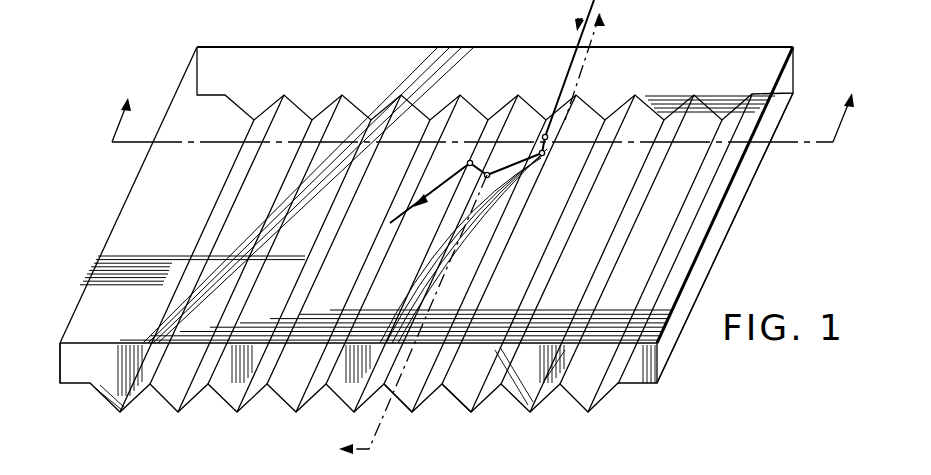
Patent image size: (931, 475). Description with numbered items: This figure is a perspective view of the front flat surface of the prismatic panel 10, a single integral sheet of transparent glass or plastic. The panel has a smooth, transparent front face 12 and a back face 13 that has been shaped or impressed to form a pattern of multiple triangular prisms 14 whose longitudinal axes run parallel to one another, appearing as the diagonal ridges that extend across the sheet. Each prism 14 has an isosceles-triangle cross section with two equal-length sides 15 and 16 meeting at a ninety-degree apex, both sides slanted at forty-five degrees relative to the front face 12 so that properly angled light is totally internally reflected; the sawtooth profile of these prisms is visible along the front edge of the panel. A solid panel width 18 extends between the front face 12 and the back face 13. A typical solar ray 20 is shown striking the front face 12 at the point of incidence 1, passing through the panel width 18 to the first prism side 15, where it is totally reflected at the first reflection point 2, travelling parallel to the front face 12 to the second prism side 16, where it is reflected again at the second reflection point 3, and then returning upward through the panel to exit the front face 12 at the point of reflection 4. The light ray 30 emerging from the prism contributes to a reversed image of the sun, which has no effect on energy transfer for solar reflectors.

The prismatic panel 10 is at (160, 57).
The front face 12 is at (774, 52).
The back face 13 is at (638, 384).
The triangular prisms 14 is at (206, 409).
The first back face of prism 15 is at (462, 378).
The second back face of prism 16 is at (410, 375).
The panel width 18 is at (57, 362).
The solar ray 20 is at (577, 23).
The emerging light ray 30 is at (432, 188).
The point of incidence 1 is at (545, 134).
The first reflection point 2 is at (543, 158).
The second reflection point 3 is at (488, 178).
The point of reflection 4 is at (470, 160).